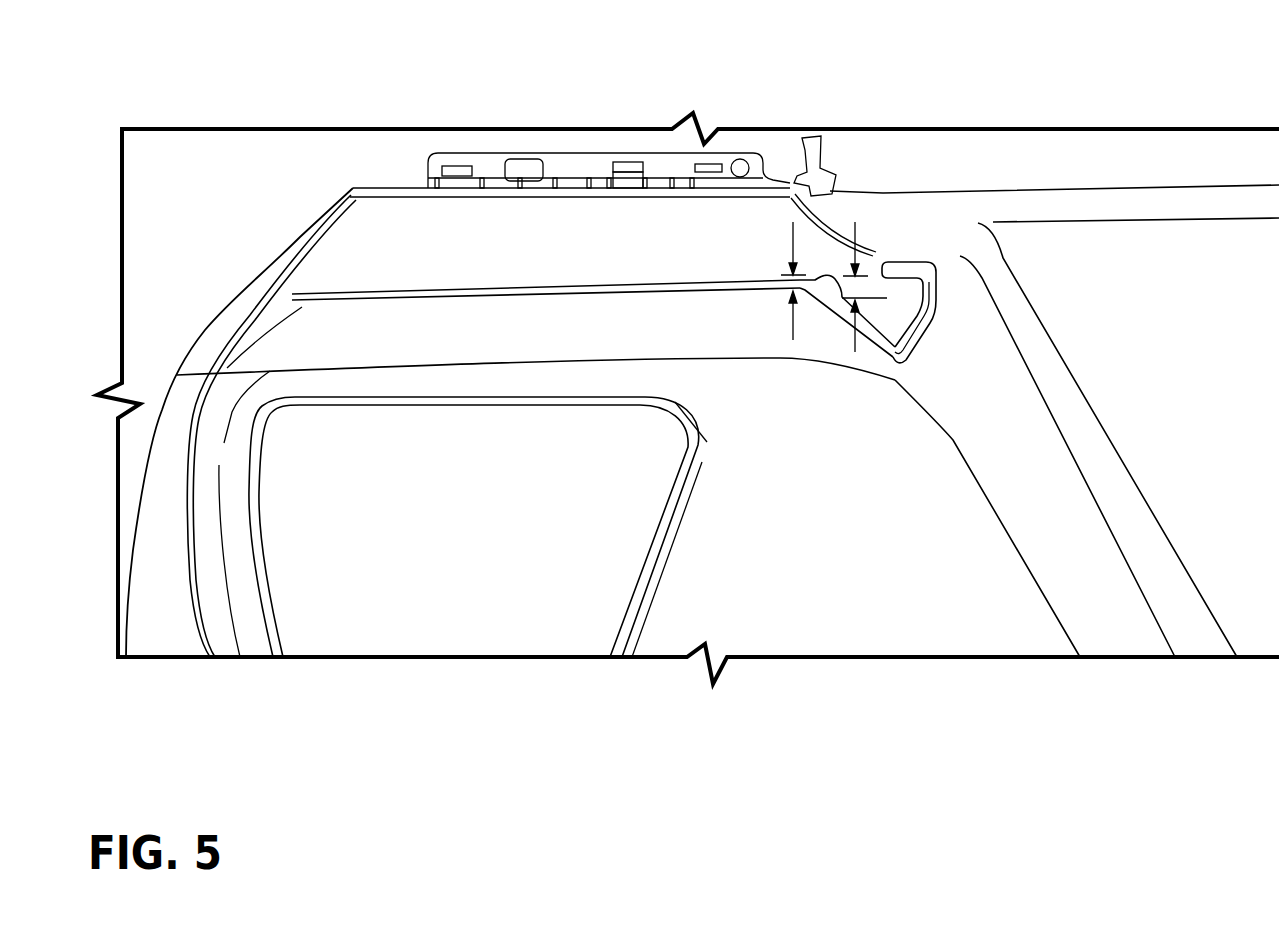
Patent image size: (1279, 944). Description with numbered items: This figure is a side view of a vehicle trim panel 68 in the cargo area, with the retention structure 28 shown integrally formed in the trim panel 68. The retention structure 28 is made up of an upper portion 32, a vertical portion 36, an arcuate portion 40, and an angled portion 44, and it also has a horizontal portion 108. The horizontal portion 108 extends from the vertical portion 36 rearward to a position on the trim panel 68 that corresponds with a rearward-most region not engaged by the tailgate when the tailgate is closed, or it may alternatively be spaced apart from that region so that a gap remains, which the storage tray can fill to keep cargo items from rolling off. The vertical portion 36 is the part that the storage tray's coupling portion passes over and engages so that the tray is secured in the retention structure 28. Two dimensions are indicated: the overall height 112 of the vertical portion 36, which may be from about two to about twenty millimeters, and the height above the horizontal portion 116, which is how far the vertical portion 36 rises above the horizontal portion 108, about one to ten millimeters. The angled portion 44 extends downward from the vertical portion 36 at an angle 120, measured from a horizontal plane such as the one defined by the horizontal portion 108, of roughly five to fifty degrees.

The retention structure 28 is at (929, 259).
The upper portion 32 is at (898, 263).
The vertical portion 36 is at (834, 272).
The arcuate portion 40 is at (928, 305).
The angled portion 44 is at (838, 303).
The trim panel 68 is at (300, 248).
The horizontal portion 108 is at (421, 290).
The overall height 112 is at (880, 206).
The height above the horizontal portion 116 is at (826, 276).
The angle 120 is at (880, 302).